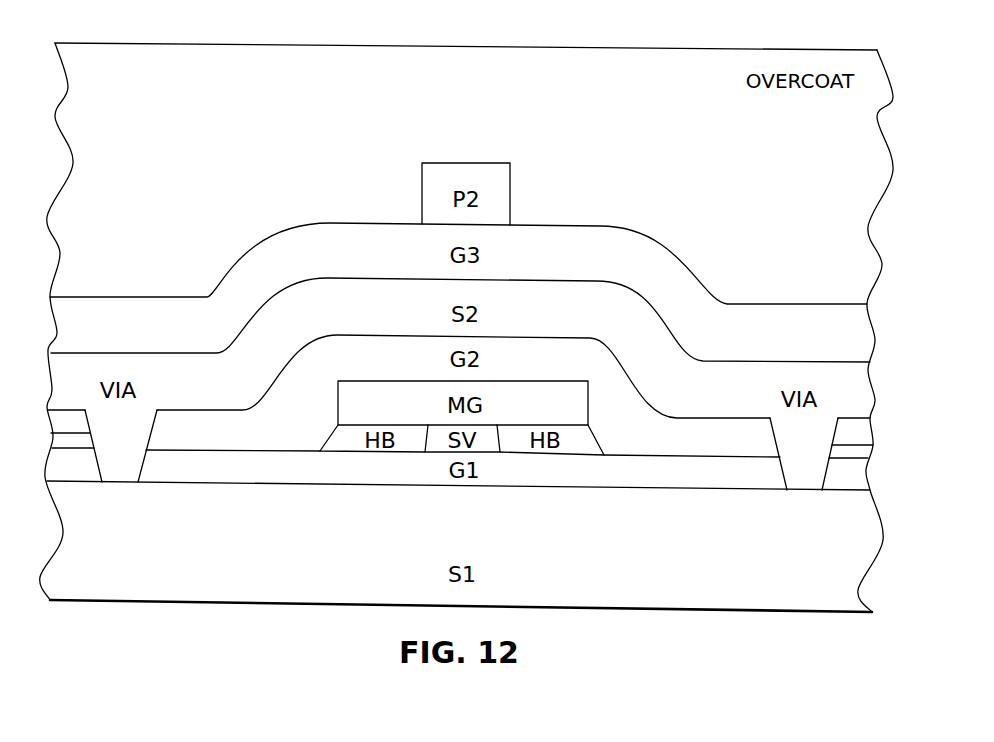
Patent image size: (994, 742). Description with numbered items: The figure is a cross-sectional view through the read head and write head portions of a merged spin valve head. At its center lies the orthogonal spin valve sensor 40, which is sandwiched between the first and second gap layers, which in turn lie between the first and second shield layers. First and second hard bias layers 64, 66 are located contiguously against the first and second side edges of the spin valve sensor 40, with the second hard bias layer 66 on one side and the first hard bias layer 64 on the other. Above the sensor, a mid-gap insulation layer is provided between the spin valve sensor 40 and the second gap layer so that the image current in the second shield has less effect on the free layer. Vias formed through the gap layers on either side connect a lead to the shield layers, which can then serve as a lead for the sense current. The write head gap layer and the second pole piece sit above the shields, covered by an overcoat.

The second hard bias layer 66 is at (352, 445).
The orthogonal spin valve sensor 40 is at (438, 445).
The first hard bias layer 64 is at (583, 448).